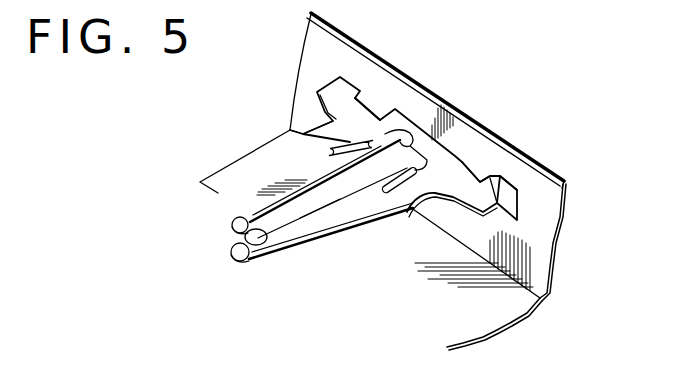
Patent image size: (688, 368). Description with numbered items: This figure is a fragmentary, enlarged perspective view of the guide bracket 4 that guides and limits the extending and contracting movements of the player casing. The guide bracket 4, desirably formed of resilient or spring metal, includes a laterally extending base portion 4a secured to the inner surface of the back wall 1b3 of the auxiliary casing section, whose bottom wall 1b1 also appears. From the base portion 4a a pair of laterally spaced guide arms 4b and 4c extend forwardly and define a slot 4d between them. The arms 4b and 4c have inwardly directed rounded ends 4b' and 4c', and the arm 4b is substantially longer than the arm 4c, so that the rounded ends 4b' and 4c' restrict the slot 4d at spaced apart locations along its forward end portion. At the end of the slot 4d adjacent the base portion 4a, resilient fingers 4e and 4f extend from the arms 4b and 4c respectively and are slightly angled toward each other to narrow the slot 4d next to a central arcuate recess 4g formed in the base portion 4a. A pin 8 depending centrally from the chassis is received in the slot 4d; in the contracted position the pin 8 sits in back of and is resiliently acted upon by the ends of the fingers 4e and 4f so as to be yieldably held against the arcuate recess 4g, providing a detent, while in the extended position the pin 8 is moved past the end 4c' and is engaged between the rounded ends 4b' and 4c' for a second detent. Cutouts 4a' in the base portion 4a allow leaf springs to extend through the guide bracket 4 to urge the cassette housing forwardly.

The guide bracket 4 is at (333, 78).
The base portion 4a is at (513, 162).
The cutouts 4a' is at (435, 102).
The guide arm 4b is at (333, 225).
The rounded end 4b' is at (262, 277).
The guide arm 4c is at (300, 161).
The rounded end 4c' is at (205, 215).
The slot 4d is at (318, 208).
The resilient finger 4e is at (407, 207).
The resilient finger 4f is at (292, 121).
The central arcuate recess 4g is at (402, 140).
The pin 8 is at (235, 247).
The bottom wall 1b1 is at (473, 320).
The back wall 1b3 is at (540, 246).